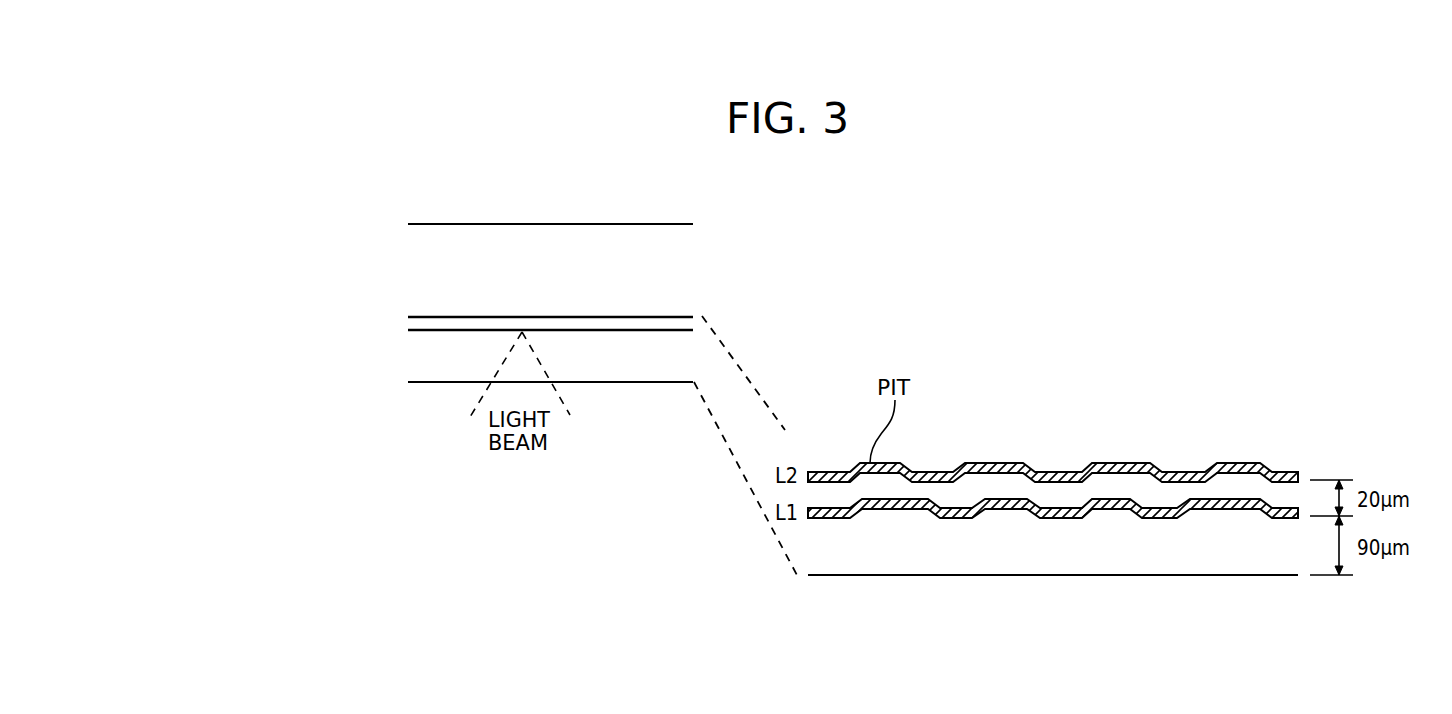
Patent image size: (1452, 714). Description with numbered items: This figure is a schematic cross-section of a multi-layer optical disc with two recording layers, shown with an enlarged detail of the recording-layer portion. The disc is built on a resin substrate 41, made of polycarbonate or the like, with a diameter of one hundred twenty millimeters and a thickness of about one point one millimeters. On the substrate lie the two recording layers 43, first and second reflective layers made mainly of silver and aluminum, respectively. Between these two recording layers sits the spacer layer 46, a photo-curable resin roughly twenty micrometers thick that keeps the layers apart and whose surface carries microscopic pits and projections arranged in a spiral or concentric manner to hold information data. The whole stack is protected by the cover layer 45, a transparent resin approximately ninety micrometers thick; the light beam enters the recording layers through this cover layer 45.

The resin substrate 41 is at (415, 274).
The recording layers 43 is at (397, 299).
The cover layer 45 is at (415, 364).
The spacer layer 46 is at (1185, 490).